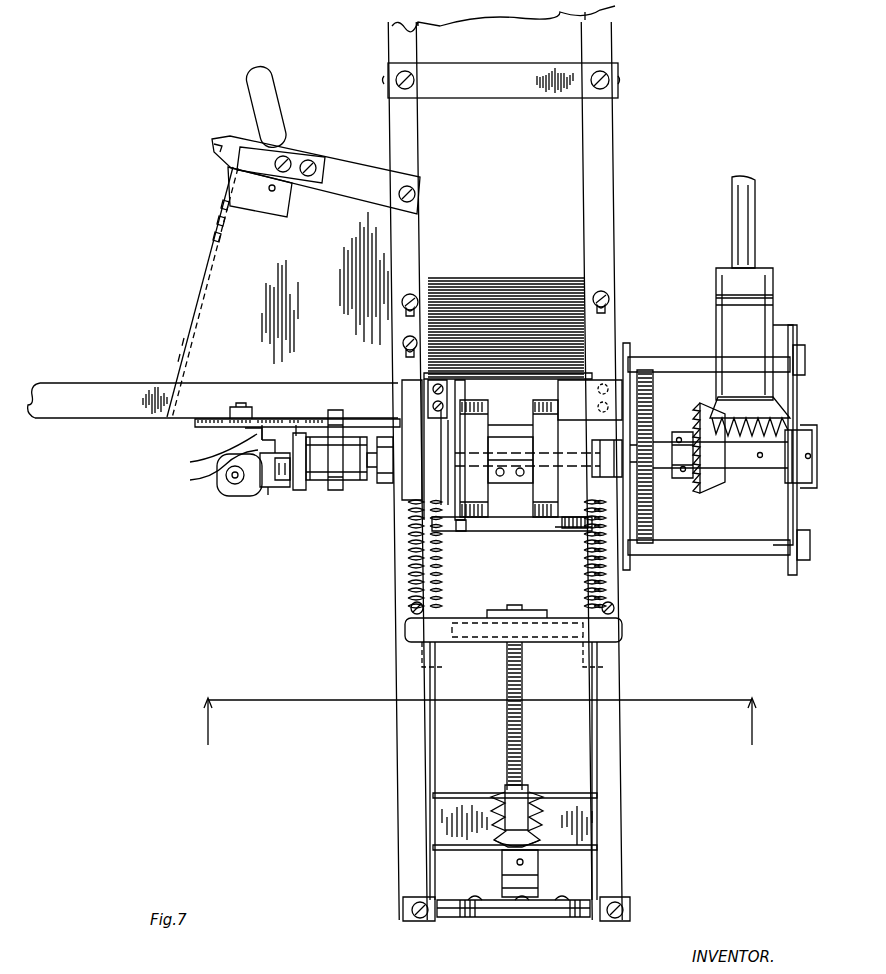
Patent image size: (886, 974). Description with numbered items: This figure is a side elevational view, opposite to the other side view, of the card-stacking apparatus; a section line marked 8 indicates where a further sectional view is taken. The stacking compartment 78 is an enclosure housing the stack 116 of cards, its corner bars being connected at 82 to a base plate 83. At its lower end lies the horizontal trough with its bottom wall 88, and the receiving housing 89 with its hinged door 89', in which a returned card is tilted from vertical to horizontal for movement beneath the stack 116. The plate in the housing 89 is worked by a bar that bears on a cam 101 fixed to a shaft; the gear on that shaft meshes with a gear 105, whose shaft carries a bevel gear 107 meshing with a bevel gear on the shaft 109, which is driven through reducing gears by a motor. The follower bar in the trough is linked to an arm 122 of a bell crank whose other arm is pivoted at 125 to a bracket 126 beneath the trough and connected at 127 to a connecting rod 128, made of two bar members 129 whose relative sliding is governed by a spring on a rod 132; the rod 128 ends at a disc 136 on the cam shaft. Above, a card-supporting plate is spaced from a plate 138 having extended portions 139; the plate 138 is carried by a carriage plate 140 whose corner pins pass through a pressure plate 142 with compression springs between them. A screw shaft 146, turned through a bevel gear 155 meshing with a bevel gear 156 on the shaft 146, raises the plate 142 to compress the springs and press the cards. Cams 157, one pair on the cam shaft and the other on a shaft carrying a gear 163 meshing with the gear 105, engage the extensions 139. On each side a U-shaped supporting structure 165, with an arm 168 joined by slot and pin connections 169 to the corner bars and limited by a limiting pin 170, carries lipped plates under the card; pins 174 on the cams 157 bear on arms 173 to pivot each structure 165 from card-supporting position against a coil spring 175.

The stacking compartment 78 is at (563, 152).
The connection of bar lower end portions to base plate 82 is at (420, 922).
The base plate 83 is at (540, 922).
The bottom wall 88 is at (106, 420).
The receiving housing 89 is at (269, 292).
The door 89' is at (203, 281).
The cam 101 is at (338, 482).
The gear 105 is at (718, 408).
The bevel gear 107 is at (718, 480).
The shaft 109 is at (735, 245).
The stack of cards 116 is at (557, 274).
The arm of bell crank 122 is at (304, 480).
The pivotal connection 125 is at (253, 432).
The bracket 126 is at (203, 427).
The connection of arm to connecting rod 127 is at (218, 472).
The connecting rod 128 is at (264, 480).
The bar members 129 is at (277, 482).
The rod 132 is at (236, 482).
The disc 136 is at (301, 492).
The plate 138 is at (565, 515).
The extended portions 139 is at (512, 530).
The carriage plate 140 is at (560, 531).
The pressure plate 142 is at (624, 632).
The screw shaft 146 is at (524, 737).
The bevel gear 155 is at (535, 796).
The bevel gear 156 is at (503, 853).
The cams 157 is at (472, 416).
The gear 163 is at (660, 522).
The U-shaped supporting structure 165 is at (588, 395).
The arm 168 is at (402, 328).
The slot and pin connection 169 is at (412, 296).
The limiting pin 170 is at (405, 348).
The arm 173 is at (412, 516).
The pins 174 is at (460, 531).
The coil spring 175 is at (412, 576).
The section line 8 is at (479, 740).